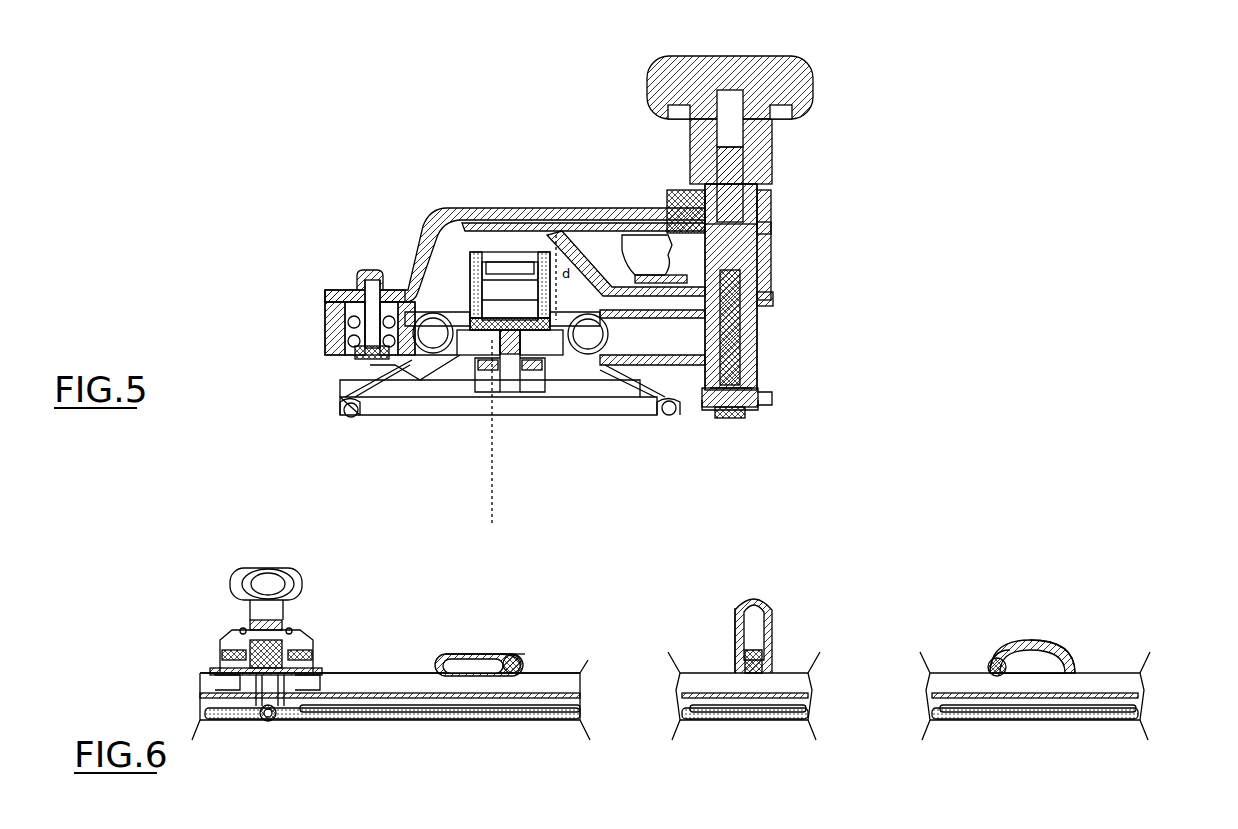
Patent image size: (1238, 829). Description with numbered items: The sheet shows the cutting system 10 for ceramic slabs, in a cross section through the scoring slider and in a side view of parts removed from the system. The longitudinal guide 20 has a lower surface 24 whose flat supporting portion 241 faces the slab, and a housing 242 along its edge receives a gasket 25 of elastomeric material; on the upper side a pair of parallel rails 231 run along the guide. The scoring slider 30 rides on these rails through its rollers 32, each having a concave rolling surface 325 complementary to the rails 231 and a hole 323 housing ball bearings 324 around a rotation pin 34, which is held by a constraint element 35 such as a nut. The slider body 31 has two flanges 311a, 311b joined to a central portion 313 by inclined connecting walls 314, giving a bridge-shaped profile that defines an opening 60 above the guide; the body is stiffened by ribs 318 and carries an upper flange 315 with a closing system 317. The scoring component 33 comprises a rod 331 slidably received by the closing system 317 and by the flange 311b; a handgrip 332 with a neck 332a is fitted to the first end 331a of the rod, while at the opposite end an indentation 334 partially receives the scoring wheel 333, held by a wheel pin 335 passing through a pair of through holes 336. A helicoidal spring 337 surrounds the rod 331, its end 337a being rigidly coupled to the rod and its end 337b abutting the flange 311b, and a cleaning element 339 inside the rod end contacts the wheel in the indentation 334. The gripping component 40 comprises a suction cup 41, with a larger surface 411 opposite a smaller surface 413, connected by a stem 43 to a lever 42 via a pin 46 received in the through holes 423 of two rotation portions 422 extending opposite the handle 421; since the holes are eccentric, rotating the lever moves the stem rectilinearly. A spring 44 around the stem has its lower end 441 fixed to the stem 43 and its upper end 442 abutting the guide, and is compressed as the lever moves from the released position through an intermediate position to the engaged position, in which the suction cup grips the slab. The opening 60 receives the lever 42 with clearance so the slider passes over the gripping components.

In FIG. 6, the cutting system 10 is at (135, 535).
In FIG. 6, the longitudinal guide 20 is at (200, 670).
In FIG. 5, the lower surface 24 is at (632, 402).
In FIG. 5, the gasket 25 is at (352, 412).
In FIG. 5, the scoring slider 30 is at (400, 165).
In FIG. 6, the scoring slider 30 is at (215, 560).
In FIG. 5, the slider body 31 is at (570, 210).
In FIG. 5, the rollers 32 is at (372, 358).
In FIG. 5, the scoring component 33 is at (640, 58).
In FIG. 6, the scoring component 33 is at (296, 575).
In FIG. 5, the rotation pin 34 is at (330, 305).
In FIG. 5, the constraint element 35 is at (365, 275).
In FIG. 5, the gripping component 40 is at (495, 245).
In FIG. 6, the gripping component 40 is at (478, 655).
In FIG. 5, the suction cup 41 is at (582, 404).
In FIG. 6, the suction cup 41 is at (514, 721).
In FIG. 5, the lever 42 is at (470, 262).
In FIG. 6, the lever 42 is at (500, 650).
In FIG. 5, the stem 43 is at (505, 352).
In FIG. 5, the spring 44 is at (522, 372).
In FIG. 6, the pin 46 is at (520, 660).
In FIG. 5, the opening 60 is at (475, 255).
In FIG. 5, the rails 231 is at (412, 372).
In FIG. 6, the rails 231 is at (400, 690).
In FIG. 5, the supporting portion 241 is at (465, 348).
In FIG. 5, the housing 242 is at (355, 395).
In FIG. 5, the flange 311a is at (330, 295).
In FIG. 5, the flange 311b is at (760, 335).
In FIG. 5, the central portion 313 is at (525, 210).
In FIG. 5, the connecting walls 314 is at (372, 290).
In FIG. 5, the upper flange 315 is at (645, 215).
In FIG. 5, the closing system 317 is at (772, 238).
In FIG. 5, the ribs 318 is at (578, 218).
In FIG. 5, the hole 323 is at (360, 350).
In FIG. 5, the ball bearings 324 is at (340, 335).
In FIG. 5, the rolling surface 325 is at (398, 366).
In FIG. 5, the rod 331 is at (762, 382).
In FIG. 5, the first end 331a is at (765, 192).
In FIG. 5, the handgrip 332 is at (790, 58).
In FIG. 5, the neck 332a is at (740, 115).
In FIG. 5, the scoring wheel 333 is at (730, 418).
In FIG. 5, the indentation 334 is at (742, 400).
In FIG. 5, the wheel pin 335 is at (740, 410).
In FIG. 5, the through holes 336 is at (748, 410).
In FIG. 5, the spring 337 is at (768, 303).
In FIG. 5, the upper end 337a is at (762, 230).
In FIG. 5, the upper end 337b is at (765, 302).
In FIG. 5, the cleaning element 339 is at (762, 398).
In FIG. 5, the larger surface 411 is at (482, 420).
In FIG. 5, the smaller surface 413 is at (602, 418).
In FIG. 6, the handle 421 is at (445, 658).
In FIG. 6, the rotation portions 422 is at (522, 654).
In FIG. 6, the through hole 423 is at (515, 665).
In FIG. 5, the lower end 441 is at (530, 368).
In FIG. 5, the upper end 442 is at (495, 372).